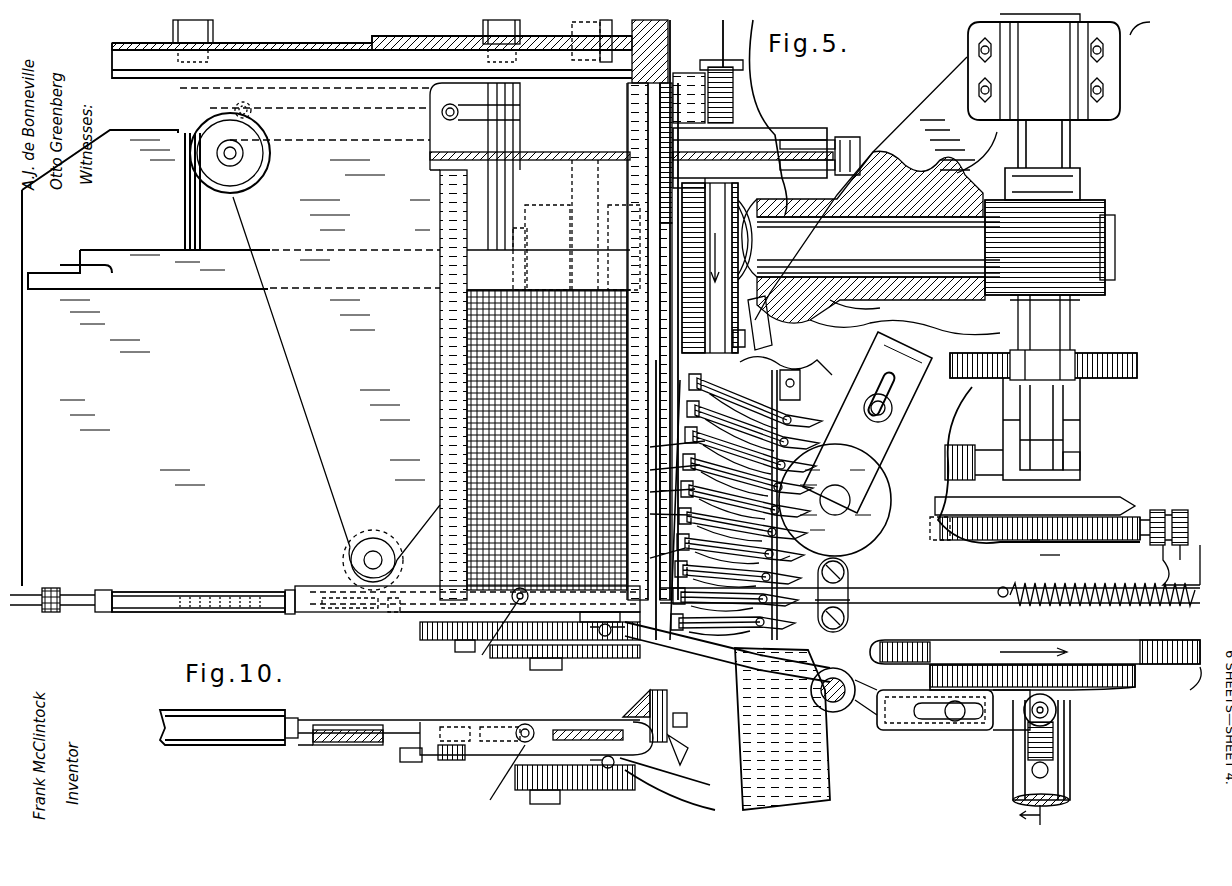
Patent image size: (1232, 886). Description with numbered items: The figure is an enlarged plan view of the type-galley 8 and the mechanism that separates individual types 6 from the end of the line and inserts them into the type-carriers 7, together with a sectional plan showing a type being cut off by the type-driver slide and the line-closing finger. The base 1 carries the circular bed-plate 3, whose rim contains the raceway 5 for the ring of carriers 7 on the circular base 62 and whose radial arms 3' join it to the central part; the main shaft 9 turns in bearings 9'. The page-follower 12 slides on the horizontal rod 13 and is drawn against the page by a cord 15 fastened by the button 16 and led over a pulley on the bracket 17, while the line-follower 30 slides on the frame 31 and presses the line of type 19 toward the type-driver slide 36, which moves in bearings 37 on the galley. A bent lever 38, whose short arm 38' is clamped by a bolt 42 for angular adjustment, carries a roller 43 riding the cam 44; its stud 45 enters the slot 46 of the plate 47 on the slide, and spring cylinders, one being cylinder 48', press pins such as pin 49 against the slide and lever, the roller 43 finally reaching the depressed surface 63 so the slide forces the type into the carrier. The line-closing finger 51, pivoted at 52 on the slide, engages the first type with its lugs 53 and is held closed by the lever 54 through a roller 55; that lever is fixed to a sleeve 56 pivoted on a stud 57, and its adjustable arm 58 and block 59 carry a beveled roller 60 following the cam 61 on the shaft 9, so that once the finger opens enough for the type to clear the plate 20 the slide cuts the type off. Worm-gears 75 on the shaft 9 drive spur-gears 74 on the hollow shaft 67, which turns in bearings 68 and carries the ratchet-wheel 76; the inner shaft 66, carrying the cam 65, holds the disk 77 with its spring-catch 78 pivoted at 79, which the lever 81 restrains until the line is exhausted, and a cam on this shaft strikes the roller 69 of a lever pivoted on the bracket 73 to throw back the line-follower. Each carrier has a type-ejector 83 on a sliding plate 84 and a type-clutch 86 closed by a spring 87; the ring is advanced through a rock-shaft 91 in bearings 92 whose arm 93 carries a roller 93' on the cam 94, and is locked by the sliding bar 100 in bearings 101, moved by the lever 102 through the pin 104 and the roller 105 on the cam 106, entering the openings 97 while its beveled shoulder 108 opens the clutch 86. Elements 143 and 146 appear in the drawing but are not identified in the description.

In FIG. 5, the base 1 is at (935, 102).
In FIG. 5, the circular bed-plate 3 is at (1035, 465).
In FIG. 5, the radial arms 3' is at (1059, 561).
In FIG. 5, the track or raceway 5 is at (800, 380).
In FIG. 5, the type 6 is at (440, 352).
In FIG. 5, the type-carrier 7 is at (741, 505).
In FIG. 5, the type-galley 8 is at (146, 358).
In FIG. 5, the main operative shaft 9 is at (1033, 474).
In FIG. 5, the bearings 9' is at (1059, 67).
In FIG. 5, the page-follower 12 is at (310, 339).
In FIG. 5, the horizontal rod 13 is at (322, 52).
In FIG. 5, the cord 15 is at (562, 156).
In FIG. 5, the button 16 is at (262, 178).
In FIG. 5, the bracket 17 is at (800, 140).
In FIG. 5, the line of type 19 is at (660, 489).
In FIG. 5, the plate 20 is at (654, 555).
In FIG. 10, the plate 20 is at (690, 705).
In FIG. 5, the line-follower 30 is at (559, 420).
In FIG. 5, the frame 31 is at (677, 330).
In FIG. 5, the type-driver slide 36 is at (335, 588).
In FIG. 10, the type-driver slide 36 is at (452, 712).
In FIG. 5, the bearings 37 is at (350, 612).
In FIG. 10, the bearings 37 is at (560, 728).
In FIG. 5, the bent lever 38 is at (612, 647).
In FIG. 5, the short arm 38' is at (565, 662).
In FIG. 10, the short arm 38' is at (575, 792).
In FIG. 5, the bolt 42 is at (552, 660).
In FIG. 10, the bolt 42 is at (537, 807).
In FIG. 5, the roller 43 is at (930, 650).
In FIG. 5, the cam 44 is at (1186, 688).
In FIG. 5, the stud 45 is at (460, 650).
In FIG. 10, the stud 45 is at (435, 760).
In FIG. 5, the slot 46 is at (440, 625).
In FIG. 10, the slot 46 is at (480, 722).
In FIG. 5, the plate 47 is at (393, 614).
In FIG. 10, the plate 47 is at (482, 755).
In FIG. 5, the cylinder 48' is at (147, 583).
In FIG. 10, the cylinder 48' is at (222, 739).
In FIG. 5, the pin 49 is at (285, 594).
In FIG. 10, the pin 49 is at (291, 738).
In FIG. 5, the line-closing finger 51 is at (501, 627).
In FIG. 10, the line-closing finger 51 is at (495, 777).
In FIG. 5, the pivot 52 is at (515, 603).
In FIG. 10, the pivot 52 is at (524, 724).
In FIG. 10, the lugs 53 is at (688, 748).
In FIG. 5, the lever 54 is at (740, 672).
In FIG. 10, the lever 54 is at (700, 795).
In FIG. 5, the roller 55 is at (605, 637).
In FIG. 10, the roller 55 is at (616, 762).
In FIG. 5, the sleeve 56 is at (880, 718).
In FIG. 5, the stud 57 is at (833, 712).
In FIG. 5, the adjustable arm 58 is at (1002, 725).
In FIG. 5, the adjustable block 59 is at (1053, 745).
In FIG. 5, the beveled roller 60 is at (1058, 708).
In FIG. 5, the cam 61 is at (1120, 680).
In FIG. 5, the circular base 62 is at (850, 430).
In FIG. 10, the circular base 62 is at (642, 690).
In FIG. 5, the depressed surface 63 is at (570, 205).
In FIG. 5, the cam 65 is at (639, 341).
In FIG. 5, the shaft 66 is at (1120, 240).
In FIG. 5, the hollow shaft 67 is at (878, 306).
In FIG. 5, the bearings 68 is at (935, 195).
In FIG. 5, the roller 69 is at (575, 41).
In FIG. 5, the bracket 73 is at (762, 100).
In FIG. 5, the spur-gear 74 is at (1068, 305).
In FIG. 5, the worm-gear 75 is at (1095, 210).
In FIG. 5, the ratchet-wheel 76 is at (869, 238).
In FIG. 5, the disk 77 is at (700, 278).
In FIG. 5, the spring-catch 78 is at (730, 238).
In FIG. 5, the pivot point 79 is at (748, 340).
In FIG. 5, the lever 81 is at (722, 68).
In FIG. 5, the type-ejector 83 is at (662, 467).
In FIG. 5, the sliding plate 84 is at (664, 445).
In FIG. 5, the type-clutch 86 is at (835, 500).
In FIG. 5, the spring 87 is at (657, 511).
In FIG. 5, the rock-shaft 91 is at (1078, 462).
In FIG. 5, the bearings 92 is at (947, 466).
In FIG. 5, the horizontal arm 93 is at (1056, 429).
In FIG. 5, the roller 93' is at (1021, 353).
In FIG. 5, the cam 94 is at (1098, 378).
In FIG. 5, the openings 97 is at (790, 556).
In FIG. 5, the sliding bar 100 is at (903, 600).
In FIG. 5, the bearings 101 is at (848, 572).
In FIG. 5, the lever 102 is at (1160, 510).
In FIG. 5, the pin 104 is at (1185, 560).
In FIG. 5, the roller 105 is at (1143, 517).
In FIG. 5, the cam 106 is at (985, 540).
In FIG. 5, the beveled shoulder 108 is at (834, 599).
In FIG. 5, the bar 143 is at (940, 505).
In FIG. 5, the rack 146 is at (1035, 540).